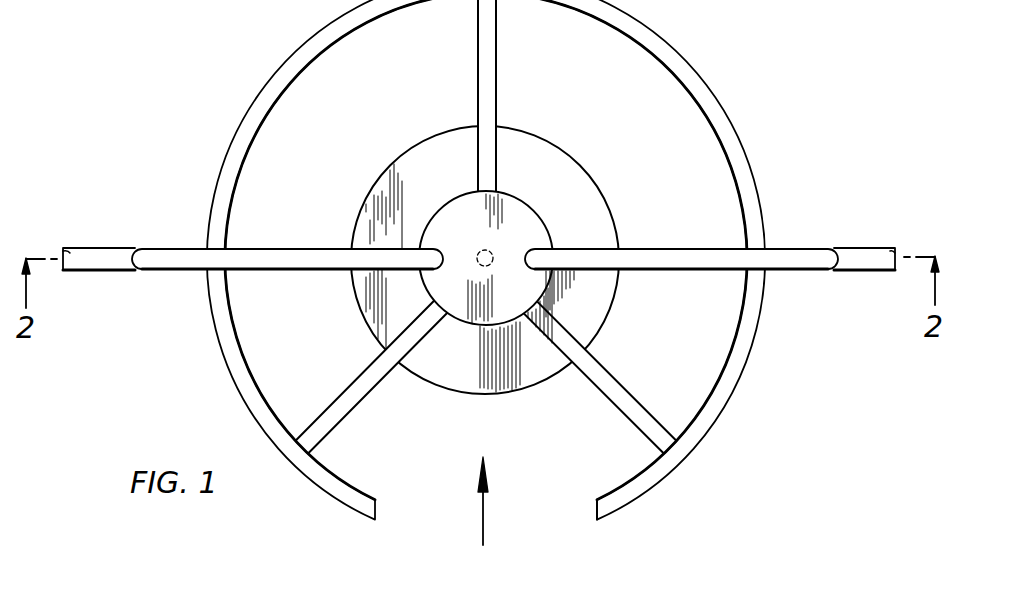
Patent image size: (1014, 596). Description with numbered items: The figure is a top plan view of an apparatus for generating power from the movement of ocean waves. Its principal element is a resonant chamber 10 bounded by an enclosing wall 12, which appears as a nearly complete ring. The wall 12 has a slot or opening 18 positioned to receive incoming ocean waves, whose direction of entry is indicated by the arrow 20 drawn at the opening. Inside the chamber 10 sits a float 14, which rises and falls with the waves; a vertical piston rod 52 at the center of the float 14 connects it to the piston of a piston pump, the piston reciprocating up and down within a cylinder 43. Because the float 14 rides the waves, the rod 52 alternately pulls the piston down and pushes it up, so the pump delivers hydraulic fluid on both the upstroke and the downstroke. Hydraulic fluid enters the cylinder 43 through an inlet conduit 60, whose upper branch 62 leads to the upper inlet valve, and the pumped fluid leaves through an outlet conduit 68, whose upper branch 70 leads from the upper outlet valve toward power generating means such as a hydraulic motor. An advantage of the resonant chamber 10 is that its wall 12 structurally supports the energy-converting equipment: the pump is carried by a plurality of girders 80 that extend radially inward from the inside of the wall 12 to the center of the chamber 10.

The chamber 10 is at (382, 106).
The enclosing wall 12 is at (297, 50).
The float 14 is at (560, 146).
The slot or opening 18 is at (574, 507).
The arrow 20 is at (483, 525).
The cylinder 43 is at (543, 225).
The vertical piston rod 52 is at (478, 254).
The inlet conduit 60 is at (863, 248).
The upper branch 62 is at (655, 248).
The outlet conduit 68 is at (115, 247).
The upper branch 70 is at (290, 247).
The girders 80 is at (477, 54).